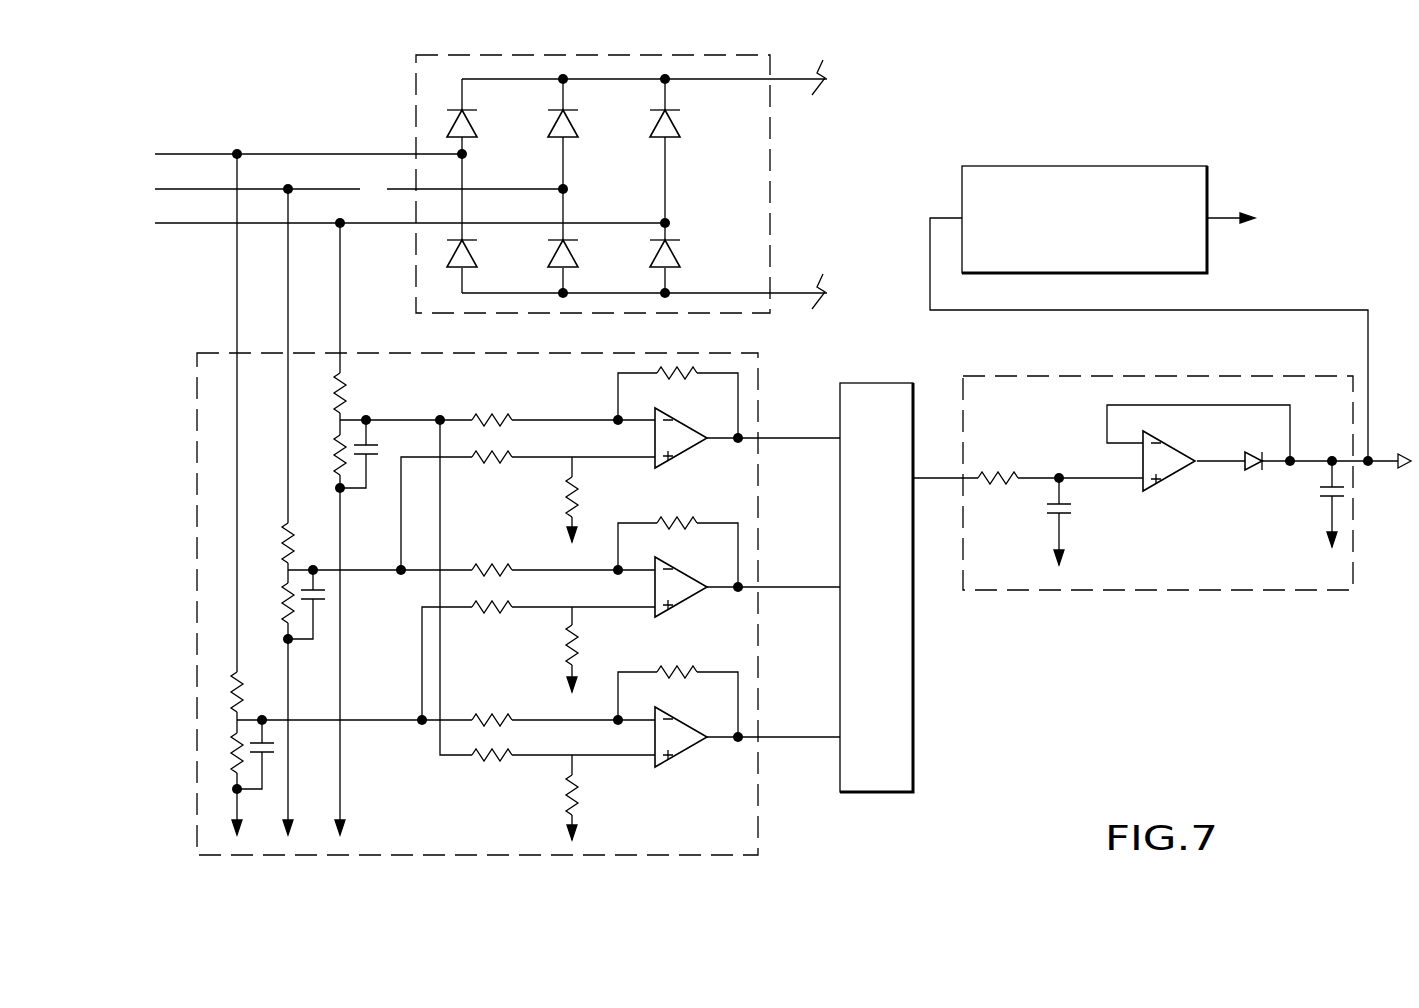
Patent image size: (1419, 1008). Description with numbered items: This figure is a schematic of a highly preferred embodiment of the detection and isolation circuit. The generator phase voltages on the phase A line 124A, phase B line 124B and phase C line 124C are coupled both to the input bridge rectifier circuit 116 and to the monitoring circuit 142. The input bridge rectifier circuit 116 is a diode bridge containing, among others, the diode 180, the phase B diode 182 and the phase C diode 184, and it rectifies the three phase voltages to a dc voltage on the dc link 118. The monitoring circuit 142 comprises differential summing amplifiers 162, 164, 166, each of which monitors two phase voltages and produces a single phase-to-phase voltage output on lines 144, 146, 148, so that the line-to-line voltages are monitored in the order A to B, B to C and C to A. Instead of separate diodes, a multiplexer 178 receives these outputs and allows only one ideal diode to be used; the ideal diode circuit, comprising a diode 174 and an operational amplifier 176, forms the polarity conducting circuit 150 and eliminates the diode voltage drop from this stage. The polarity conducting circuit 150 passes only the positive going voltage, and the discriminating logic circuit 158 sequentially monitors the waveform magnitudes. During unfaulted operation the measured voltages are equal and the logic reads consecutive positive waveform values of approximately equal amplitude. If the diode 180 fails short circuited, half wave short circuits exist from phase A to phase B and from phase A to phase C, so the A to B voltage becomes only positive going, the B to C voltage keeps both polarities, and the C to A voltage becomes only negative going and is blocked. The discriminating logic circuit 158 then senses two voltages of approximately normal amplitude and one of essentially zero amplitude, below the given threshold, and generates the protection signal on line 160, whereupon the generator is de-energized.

The phase A line 124A is at (213, 152).
The phase B line 124B is at (302, 188).
The phase C line 124C is at (403, 222).
The input bridge rectifier circuit 116 is at (645, 184).
The dc link 118 is at (788, 82).
The diode 180 is at (473, 120).
The phase B diode 182 is at (575, 120).
The phase C diode 184 is at (677, 120).
The monitoring circuit 142 is at (527, 504).
The line 144 is at (783, 437).
The line 146 is at (780, 586).
The line 148 is at (778, 736).
The differential summing amplifier 162 is at (677, 456).
The differential summing amplifier 164 is at (678, 606).
The differential summing amplifier 166 is at (678, 757).
The multiplexer 178 is at (880, 383).
The polarity conducting circuit 150 is at (1162, 520).
The operational amplifier 176 is at (1175, 480).
The diode 174 is at (1256, 472).
The discriminating logic circuit 158 is at (1015, 166).
The line 160 is at (1213, 210).